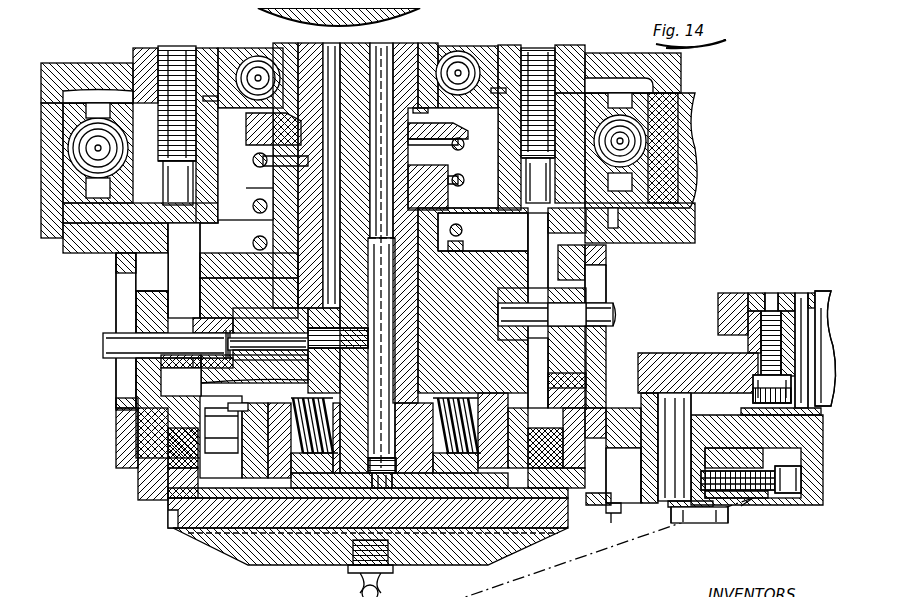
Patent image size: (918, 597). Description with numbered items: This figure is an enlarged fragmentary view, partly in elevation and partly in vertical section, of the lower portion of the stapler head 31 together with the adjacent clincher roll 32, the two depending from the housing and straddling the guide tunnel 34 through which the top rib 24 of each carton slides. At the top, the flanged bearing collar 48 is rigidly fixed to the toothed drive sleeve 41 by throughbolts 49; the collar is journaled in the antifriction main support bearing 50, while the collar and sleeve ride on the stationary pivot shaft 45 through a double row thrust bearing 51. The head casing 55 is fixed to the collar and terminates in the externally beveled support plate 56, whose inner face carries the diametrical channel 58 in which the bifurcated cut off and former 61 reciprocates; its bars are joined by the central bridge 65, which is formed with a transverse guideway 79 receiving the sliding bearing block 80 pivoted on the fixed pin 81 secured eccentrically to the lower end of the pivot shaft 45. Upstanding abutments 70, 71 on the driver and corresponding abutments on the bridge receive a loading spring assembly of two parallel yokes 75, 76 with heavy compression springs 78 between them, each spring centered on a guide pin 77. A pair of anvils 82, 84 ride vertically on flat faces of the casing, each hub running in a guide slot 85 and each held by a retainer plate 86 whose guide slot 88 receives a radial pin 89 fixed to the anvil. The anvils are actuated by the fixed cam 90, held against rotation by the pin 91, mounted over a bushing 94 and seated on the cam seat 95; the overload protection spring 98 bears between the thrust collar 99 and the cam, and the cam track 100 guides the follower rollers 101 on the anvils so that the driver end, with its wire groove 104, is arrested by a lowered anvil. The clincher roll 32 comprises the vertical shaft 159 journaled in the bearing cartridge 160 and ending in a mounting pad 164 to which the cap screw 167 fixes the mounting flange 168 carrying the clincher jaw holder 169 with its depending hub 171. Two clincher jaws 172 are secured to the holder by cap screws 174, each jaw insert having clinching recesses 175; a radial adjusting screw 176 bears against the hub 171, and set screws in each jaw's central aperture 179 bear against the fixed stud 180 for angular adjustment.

The top rib 24 is at (594, 520).
The stapler head 31 is at (110, 375).
The clincher roll 32 is at (676, 345).
The guide tunnel 34 is at (623, 455).
The drive sleeve 41 is at (577, 45).
The pivot shaft 45 is at (398, 35).
The flanged bearing collar 48 is at (68, 230).
The throughbolts 49 is at (164, 50).
The main support bearing 50 is at (655, 108).
The antifriction bearing 51 is at (482, 40).
The head casing 55 is at (148, 264).
The support plate 56 is at (235, 555).
The channel 58 is at (175, 520).
The cut off and former 61 is at (415, 485).
The bridge 65 is at (320, 535).
The upstanding abutment 70 is at (572, 383).
The upstanding abutment 71 is at (250, 465).
The yoke 75 is at (399, 471).
The yoke 76 is at (268, 440).
The guide pin 77 is at (208, 445).
The compression spring 78 is at (305, 456).
The transverse guideway 79 is at (320, 458).
The bearing block 80 is at (427, 450).
The fixed pin 81 is at (382, 461).
The anvil 82 is at (578, 340).
The anvil 84 is at (130, 437).
The guide slot 85 is at (180, 247).
The retainer plate 86 is at (110, 395).
The guide slot 88 is at (115, 298).
The pin 89 is at (94, 338).
The cam 90 is at (200, 278).
The pin 91 is at (265, 183).
The bushing 94 is at (433, 195).
The cam seat 95 is at (262, 380).
The overload protection spring 98 is at (455, 170).
The thrust collar 99 is at (460, 120).
The cam track 100 is at (206, 387).
The follower roller 101 is at (203, 313).
The wire groove 104 is at (162, 492).
The clincher roll shaft 159 is at (798, 283).
The bearing cartridge 160 is at (722, 285).
The mounting pad 164 is at (780, 300).
The cap screw 167 is at (750, 333).
The mounting flange 168 is at (646, 345).
The clincher jaw holder 169 is at (612, 409).
The depending hub 171 is at (805, 497).
The clincher jaw 172 is at (744, 450).
The cap screw 174 is at (692, 523).
The clinching recess 175 is at (610, 508).
The radial adjusting screw 176 is at (760, 490).
The central aperture 179 is at (660, 493).
The fixed stud 180 is at (665, 503).